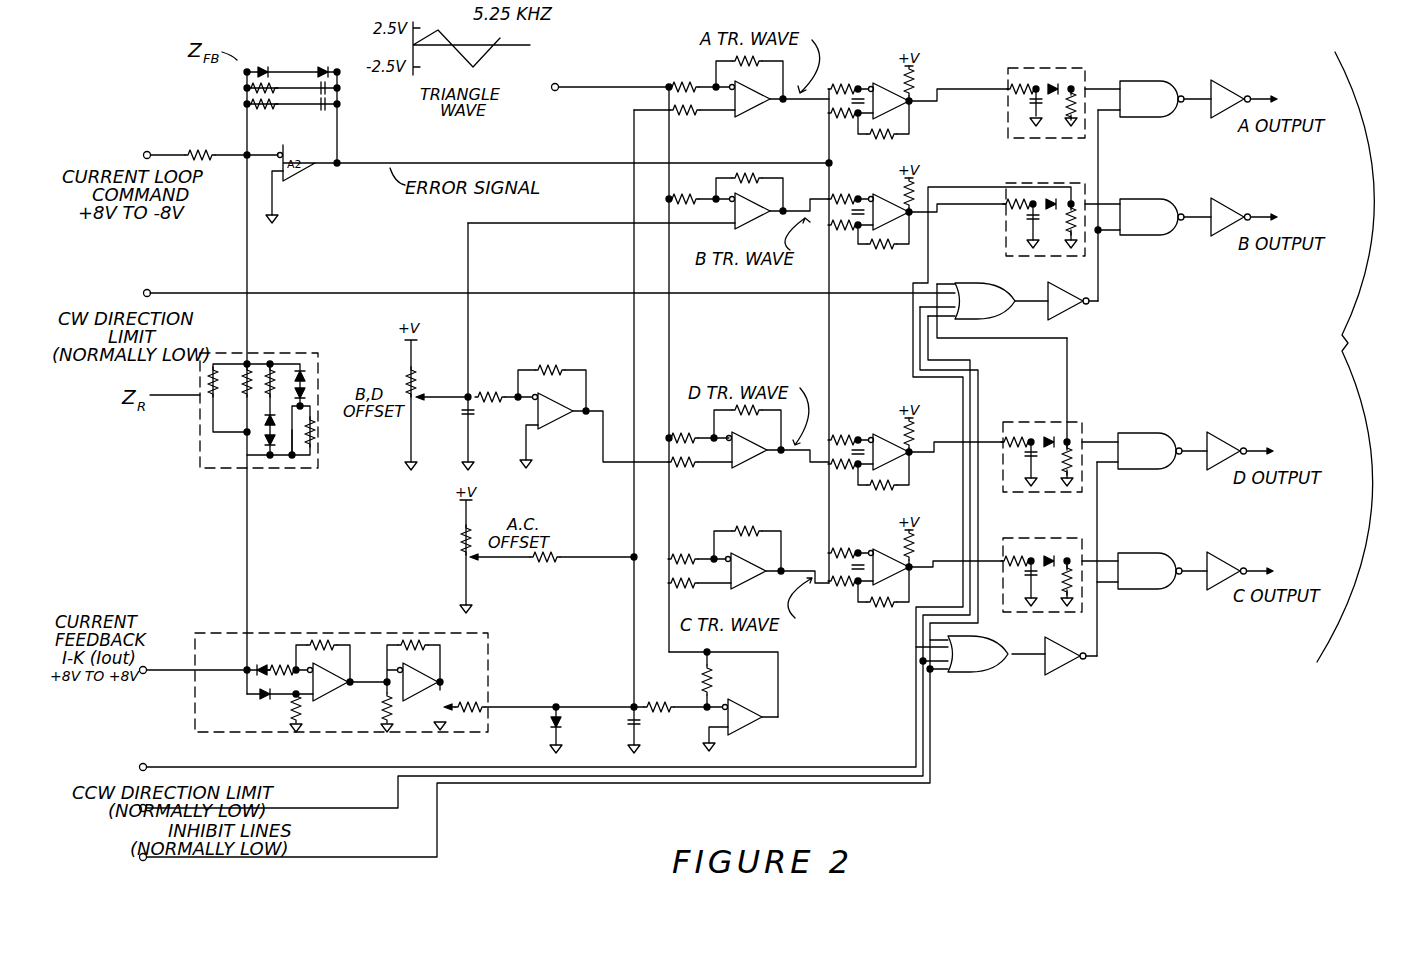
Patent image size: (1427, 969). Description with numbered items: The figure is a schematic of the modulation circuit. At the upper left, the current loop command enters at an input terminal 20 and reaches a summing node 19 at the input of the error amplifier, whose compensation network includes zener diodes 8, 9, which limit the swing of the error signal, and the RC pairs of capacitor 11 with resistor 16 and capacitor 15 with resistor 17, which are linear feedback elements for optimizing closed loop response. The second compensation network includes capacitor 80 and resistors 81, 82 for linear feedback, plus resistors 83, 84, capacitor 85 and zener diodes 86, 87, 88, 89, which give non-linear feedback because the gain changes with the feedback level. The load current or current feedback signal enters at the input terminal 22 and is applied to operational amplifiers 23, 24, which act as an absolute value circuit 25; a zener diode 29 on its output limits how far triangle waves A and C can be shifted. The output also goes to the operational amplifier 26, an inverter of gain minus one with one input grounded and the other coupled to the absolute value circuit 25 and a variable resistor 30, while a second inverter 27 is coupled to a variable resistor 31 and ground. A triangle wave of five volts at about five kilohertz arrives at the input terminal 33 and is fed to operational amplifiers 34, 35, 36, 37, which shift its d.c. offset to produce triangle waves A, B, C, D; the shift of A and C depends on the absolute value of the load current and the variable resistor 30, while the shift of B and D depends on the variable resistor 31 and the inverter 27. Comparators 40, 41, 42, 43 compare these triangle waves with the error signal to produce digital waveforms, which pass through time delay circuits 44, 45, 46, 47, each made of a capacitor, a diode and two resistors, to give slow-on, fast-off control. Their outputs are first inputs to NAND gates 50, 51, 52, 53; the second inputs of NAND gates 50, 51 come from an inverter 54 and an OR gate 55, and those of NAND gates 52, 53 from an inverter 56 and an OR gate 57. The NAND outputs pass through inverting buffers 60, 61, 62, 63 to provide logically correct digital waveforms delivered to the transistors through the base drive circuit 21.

The zener diode 8 is at (259, 68).
The zener diode 9 is at (321, 68).
The capacitor 11 is at (340, 92).
The capacitor 15 is at (337, 110).
The resistor 16 is at (244, 88).
The resistor 17 is at (244, 104).
The summing node 19 is at (249, 158).
The current loop command input 20 is at (195, 152).
The base drive circuit 21 is at (1364, 357).
The input terminal 22 is at (147, 675).
The operational amplifier 23 is at (332, 696).
The operational amplifier 24 is at (406, 700).
The absolute value circuit 25 is at (465, 633).
The operational amplifier 26 is at (755, 728).
The inverter 27 is at (552, 426).
The zener diode 29 is at (565, 722).
The variable resistor 30 is at (462, 559).
The variable resistor 31 is at (414, 400).
The input terminal 33 is at (558, 83).
The operational amplifier 34 is at (751, 113).
The operational amplifier 35 is at (751, 225).
The operational amplifier 36 is at (755, 464).
The operational amplifier 37 is at (755, 585).
The comparator 40 is at (888, 85).
The comparator 41 is at (888, 196).
The comparator 42 is at (888, 436).
The comparator 43 is at (888, 549).
The time delay circuit 44 is at (1025, 68).
The time delay circuit 45 is at (1025, 183).
The time delay circuit 46 is at (1052, 421).
The time delay circuit 47 is at (1052, 538).
The NAND gate 50 is at (1140, 82).
The NAND gate 51 is at (1140, 199).
The NAND gate 52 is at (1138, 433).
The NAND gate 53 is at (1138, 553).
The inverter 54 is at (1076, 318).
The OR gate 55 is at (1000, 318).
The inverter 56 is at (1084, 670).
The OR gate 57 is at (968, 674).
The inverting buffer 60 is at (1228, 81).
The inverting buffer 61 is at (1228, 199).
The inverting buffer 62 is at (1224, 433).
The inverting buffer 63 is at (1224, 553).
The capacitor 80 is at (205, 412).
The resistor 81 is at (208, 380).
The resistor 82 is at (250, 365).
The resistor 83 is at (290, 372).
The resistor 84 is at (318, 450).
The capacitor 85 is at (300, 462).
The zener diode 86 is at (306, 378).
The zener diode 87 is at (308, 397).
The zener diode 88 is at (262, 428).
The zener diode 89 is at (280, 460).